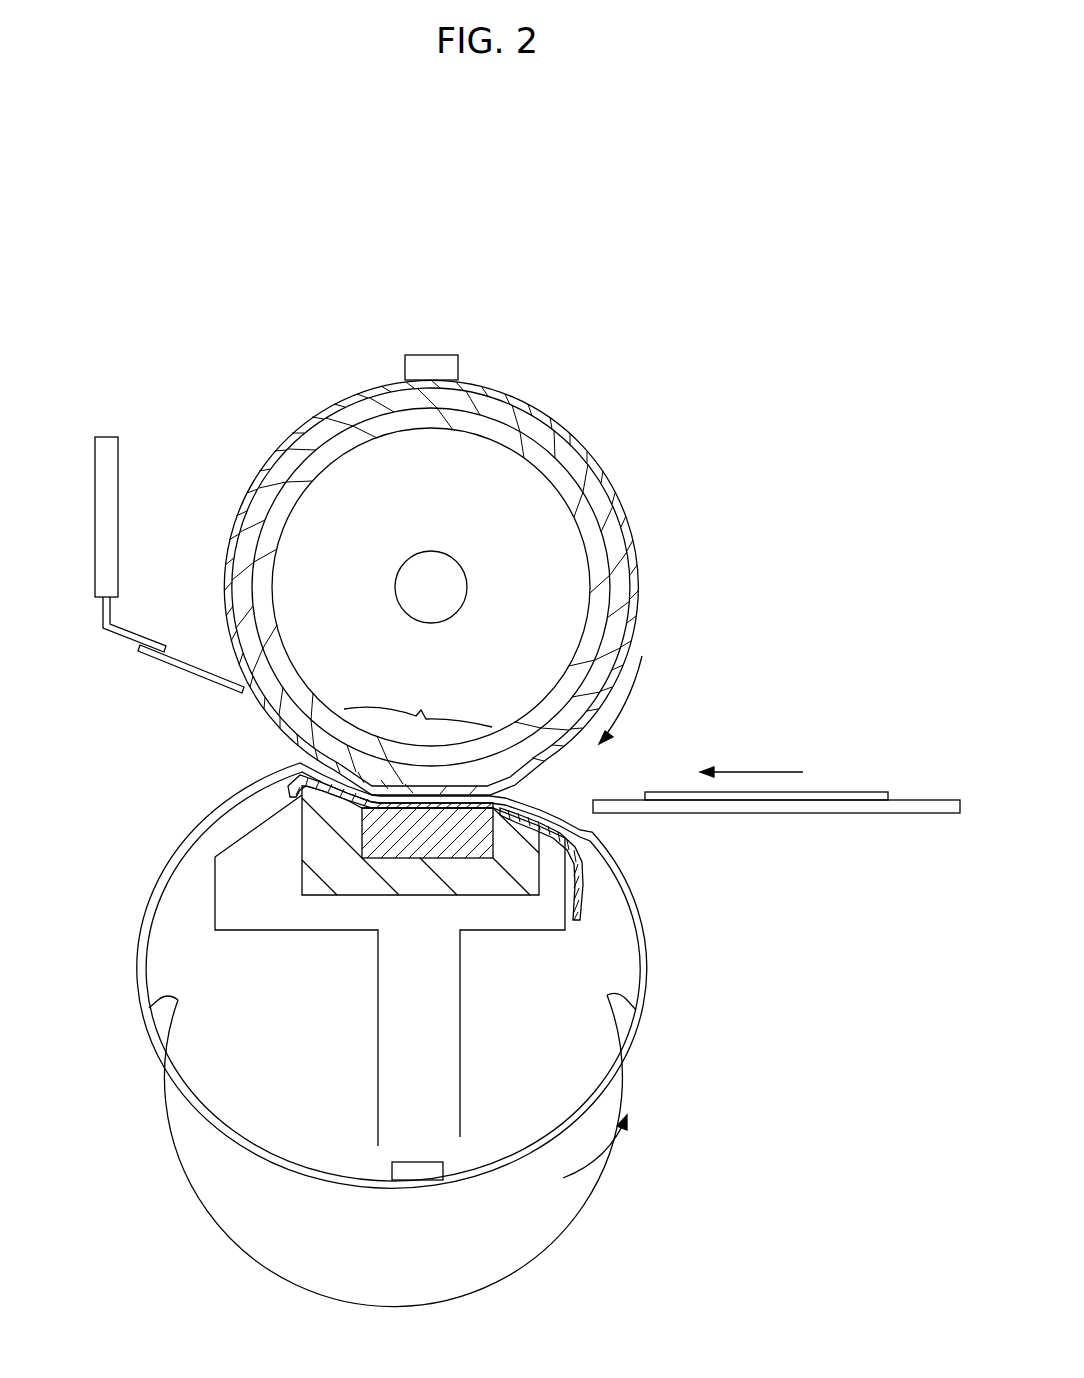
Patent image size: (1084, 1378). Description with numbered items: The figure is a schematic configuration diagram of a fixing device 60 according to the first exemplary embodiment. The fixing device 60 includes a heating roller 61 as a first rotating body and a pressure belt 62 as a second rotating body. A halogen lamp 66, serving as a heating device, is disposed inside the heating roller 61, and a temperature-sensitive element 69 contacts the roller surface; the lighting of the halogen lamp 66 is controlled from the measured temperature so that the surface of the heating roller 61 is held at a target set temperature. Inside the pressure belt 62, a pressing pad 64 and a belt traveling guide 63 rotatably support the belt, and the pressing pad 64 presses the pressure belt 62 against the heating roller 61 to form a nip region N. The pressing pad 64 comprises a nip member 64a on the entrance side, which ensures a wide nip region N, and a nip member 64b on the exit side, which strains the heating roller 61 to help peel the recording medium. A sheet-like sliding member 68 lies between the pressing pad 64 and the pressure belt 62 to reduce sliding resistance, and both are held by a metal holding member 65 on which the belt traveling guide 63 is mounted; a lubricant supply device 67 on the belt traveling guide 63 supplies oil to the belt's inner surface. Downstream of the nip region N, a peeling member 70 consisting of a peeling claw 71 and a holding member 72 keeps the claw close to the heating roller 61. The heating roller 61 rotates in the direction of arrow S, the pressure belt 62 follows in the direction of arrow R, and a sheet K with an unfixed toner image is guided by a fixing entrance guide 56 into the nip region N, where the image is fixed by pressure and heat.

The fixing device 60 is at (421, 232).
The heating roller 61 is at (590, 425).
The pressure belt 62 is at (650, 936).
The belt traveling guide 63 is at (618, 1030).
The pressing pad 64 is at (322, 903).
The nip member 64a is at (468, 860).
The nip member 64b is at (318, 818).
The holding member 65 is at (226, 886).
The halogen lamp 66 is at (462, 567).
The lubricant supply device 67 is at (418, 1183).
The sliding member 68 is at (590, 848).
The temperature-sensitive element 69 is at (432, 353).
The peeling member 70 is at (102, 663).
The peeling claw 71 is at (192, 650).
The holding member 72 is at (103, 627).
The fixing entrance guide 56 is at (855, 815).
The sheet K is at (846, 790).
The nip region N is at (418, 697).
The arrow S is at (629, 700).
The arrow R is at (595, 1146).